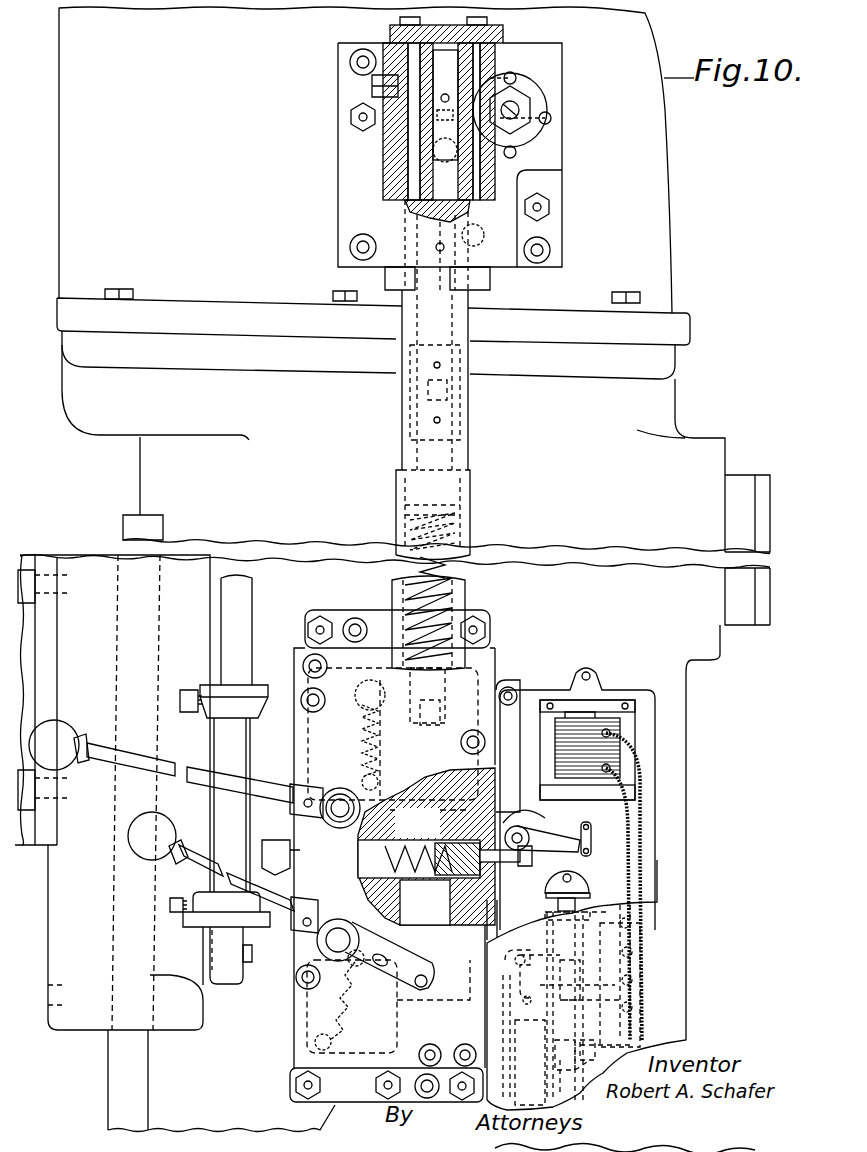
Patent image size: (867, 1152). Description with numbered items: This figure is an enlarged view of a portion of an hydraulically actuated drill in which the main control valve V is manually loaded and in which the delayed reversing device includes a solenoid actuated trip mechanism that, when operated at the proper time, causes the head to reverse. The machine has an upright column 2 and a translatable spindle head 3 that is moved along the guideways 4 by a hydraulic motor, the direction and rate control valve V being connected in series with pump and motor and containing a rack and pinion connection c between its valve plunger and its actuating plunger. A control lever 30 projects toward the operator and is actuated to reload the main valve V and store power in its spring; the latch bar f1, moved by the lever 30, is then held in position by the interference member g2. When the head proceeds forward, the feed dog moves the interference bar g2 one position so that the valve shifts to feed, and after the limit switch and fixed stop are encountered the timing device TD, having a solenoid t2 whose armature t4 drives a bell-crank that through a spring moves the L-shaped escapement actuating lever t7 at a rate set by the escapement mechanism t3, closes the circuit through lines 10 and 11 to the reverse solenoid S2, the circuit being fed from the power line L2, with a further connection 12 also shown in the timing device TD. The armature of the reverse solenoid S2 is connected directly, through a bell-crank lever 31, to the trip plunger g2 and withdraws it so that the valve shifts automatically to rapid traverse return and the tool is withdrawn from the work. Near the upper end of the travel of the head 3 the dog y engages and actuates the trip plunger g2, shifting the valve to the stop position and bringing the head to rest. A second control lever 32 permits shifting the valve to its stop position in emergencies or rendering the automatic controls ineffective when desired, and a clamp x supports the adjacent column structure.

The direction and rate control valve V is at (362, 165).
The upright column 2 is at (395, 569).
The translatable spindle head 3 is at (53, 700).
The guideways 4 is at (113, 1090).
The clamp on column x is at (255, 690).
The dog y is at (196, 918).
The second control lever 32 is at (62, 738).
The control lever 30 is at (126, 845).
The interference member g2 is at (279, 845).
The rack and pinion connection c is at (466, 595).
The latch bar f1 is at (445, 846).
The reverse solenoid S2 is at (612, 752).
The bell-crank lever 31 is at (552, 838).
The line 11 is at (623, 855).
The terminal contact 12 is at (598, 927).
The line 10 is at (540, 951).
The solenoid t2 is at (556, 938).
The armature t4 is at (578, 973).
The L-shaped escapement actuating lever t7 is at (575, 1036).
The escapement mechanism t3 is at (550, 1089).
The power line L2 is at (575, 1086).
The timing device TD is at (652, 963).